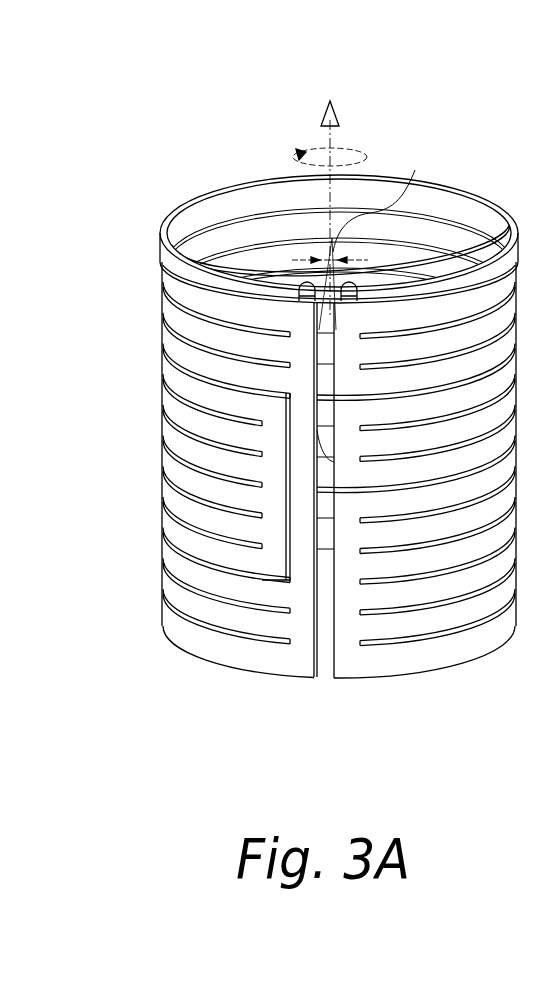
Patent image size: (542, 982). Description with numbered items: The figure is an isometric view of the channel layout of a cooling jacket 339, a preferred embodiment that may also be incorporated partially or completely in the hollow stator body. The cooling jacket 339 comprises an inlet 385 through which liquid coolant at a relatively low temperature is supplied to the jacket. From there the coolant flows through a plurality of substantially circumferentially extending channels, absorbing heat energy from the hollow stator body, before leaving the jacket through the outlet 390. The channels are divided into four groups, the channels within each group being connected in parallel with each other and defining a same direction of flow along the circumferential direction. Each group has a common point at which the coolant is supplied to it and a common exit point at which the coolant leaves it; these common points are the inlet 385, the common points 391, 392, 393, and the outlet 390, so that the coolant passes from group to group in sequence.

The cooling jacket 339 is at (407, 112).
The inlet 385 is at (353, 287).
The outlet 390 is at (297, 283).
The common point 391 is at (303, 517).
The common point 392 is at (343, 593).
The common point 393 is at (272, 460).